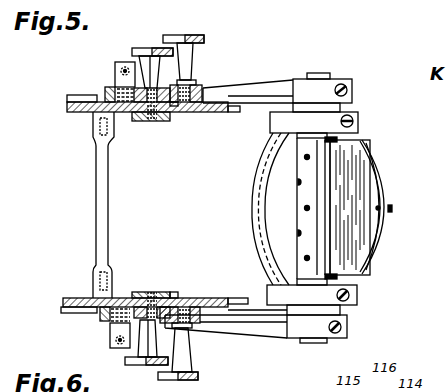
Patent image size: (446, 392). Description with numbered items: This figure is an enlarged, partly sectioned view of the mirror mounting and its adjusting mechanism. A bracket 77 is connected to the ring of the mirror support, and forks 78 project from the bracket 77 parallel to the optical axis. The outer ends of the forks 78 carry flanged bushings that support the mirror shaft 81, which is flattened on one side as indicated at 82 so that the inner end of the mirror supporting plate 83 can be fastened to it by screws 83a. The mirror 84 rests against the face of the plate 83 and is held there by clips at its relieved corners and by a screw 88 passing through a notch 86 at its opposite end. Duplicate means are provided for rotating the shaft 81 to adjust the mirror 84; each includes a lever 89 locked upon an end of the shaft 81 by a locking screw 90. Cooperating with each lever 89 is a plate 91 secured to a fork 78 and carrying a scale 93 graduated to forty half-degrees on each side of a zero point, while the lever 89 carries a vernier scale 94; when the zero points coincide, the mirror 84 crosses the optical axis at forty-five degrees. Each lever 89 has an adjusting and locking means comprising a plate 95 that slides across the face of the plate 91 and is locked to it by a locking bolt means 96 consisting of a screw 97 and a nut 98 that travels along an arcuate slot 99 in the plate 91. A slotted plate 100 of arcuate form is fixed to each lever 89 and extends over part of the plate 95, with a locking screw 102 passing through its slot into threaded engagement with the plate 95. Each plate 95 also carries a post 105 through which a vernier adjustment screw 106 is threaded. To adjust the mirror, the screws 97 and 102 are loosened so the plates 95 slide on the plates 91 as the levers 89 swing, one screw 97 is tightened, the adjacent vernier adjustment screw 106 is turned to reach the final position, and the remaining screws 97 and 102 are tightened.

The bracket 77 is at (257, 211).
The fork 78 is at (275, 133).
The mirror shaft 81 is at (320, 78).
The flattened side 82 is at (325, 236).
The mirror supporting plate 83 is at (362, 163).
The screws 83a is at (305, 208).
The mirror 84 is at (388, 181).
The notch 86 is at (391, 208).
The screw 88 is at (393, 210).
The lever 89 is at (263, 83).
The locking screw 90 is at (352, 92).
The plate 91 is at (217, 113).
The scale 93 is at (67, 98).
The vernier scale 94 is at (108, 95).
The plate 95 is at (172, 113).
The locking bolt means 96 is at (150, 52).
The screw 97 is at (140, 60).
The nut 98 is at (142, 120).
The arcuate slot 99 is at (113, 120).
The slotted plate 100 is at (198, 86).
The locking screw 102 is at (190, 62).
The post 105 is at (116, 75).
The vernier adjustment screw 106 is at (119, 70).